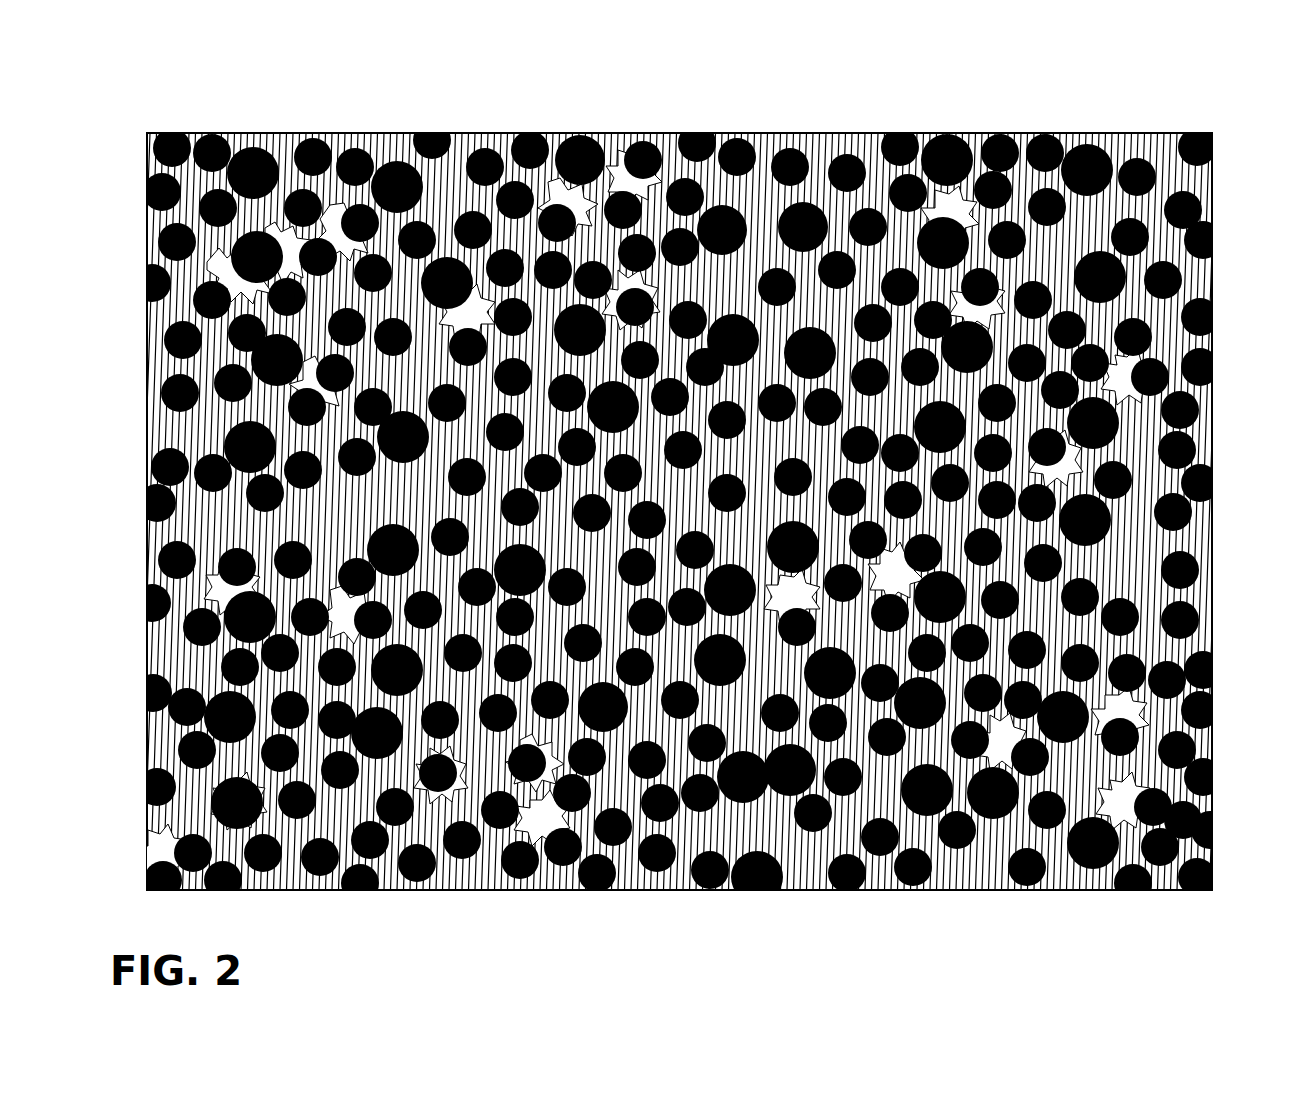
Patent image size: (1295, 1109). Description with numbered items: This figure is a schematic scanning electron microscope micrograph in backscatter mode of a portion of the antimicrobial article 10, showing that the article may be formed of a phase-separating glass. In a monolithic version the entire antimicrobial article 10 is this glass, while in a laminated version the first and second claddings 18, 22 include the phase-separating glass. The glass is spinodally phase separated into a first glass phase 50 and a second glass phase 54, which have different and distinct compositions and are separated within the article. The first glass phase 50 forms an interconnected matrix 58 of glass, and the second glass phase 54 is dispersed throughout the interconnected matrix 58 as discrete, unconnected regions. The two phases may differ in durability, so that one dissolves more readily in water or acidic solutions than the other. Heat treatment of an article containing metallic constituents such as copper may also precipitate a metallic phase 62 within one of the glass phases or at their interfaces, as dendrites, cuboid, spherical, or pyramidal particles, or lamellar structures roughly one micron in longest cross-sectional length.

The antimicrobial article 10 is at (670, 519).
The first cladding 18 is at (646, 477).
The second cladding 22 is at (104, 152).
The first glass phase 50 is at (443, 172).
The second glass phase 54 is at (320, 146).
The interconnected matrix 58 is at (812, 165).
The metallic phase 62 is at (661, 195).